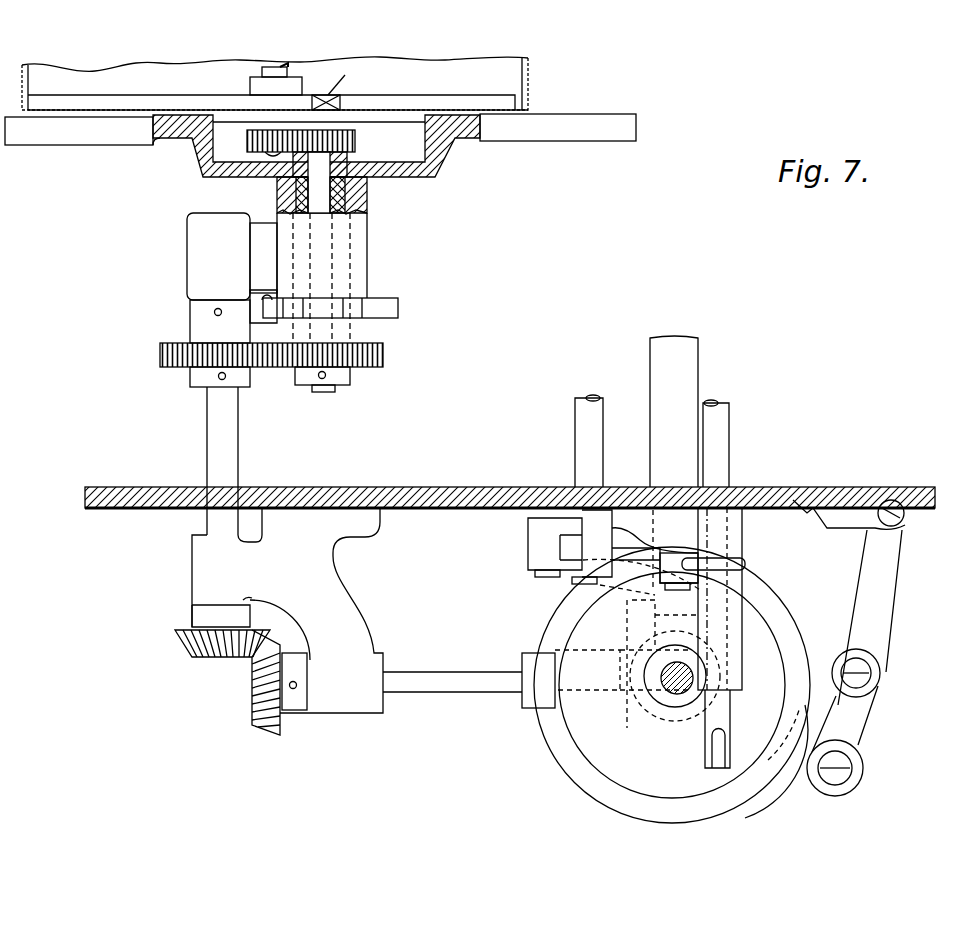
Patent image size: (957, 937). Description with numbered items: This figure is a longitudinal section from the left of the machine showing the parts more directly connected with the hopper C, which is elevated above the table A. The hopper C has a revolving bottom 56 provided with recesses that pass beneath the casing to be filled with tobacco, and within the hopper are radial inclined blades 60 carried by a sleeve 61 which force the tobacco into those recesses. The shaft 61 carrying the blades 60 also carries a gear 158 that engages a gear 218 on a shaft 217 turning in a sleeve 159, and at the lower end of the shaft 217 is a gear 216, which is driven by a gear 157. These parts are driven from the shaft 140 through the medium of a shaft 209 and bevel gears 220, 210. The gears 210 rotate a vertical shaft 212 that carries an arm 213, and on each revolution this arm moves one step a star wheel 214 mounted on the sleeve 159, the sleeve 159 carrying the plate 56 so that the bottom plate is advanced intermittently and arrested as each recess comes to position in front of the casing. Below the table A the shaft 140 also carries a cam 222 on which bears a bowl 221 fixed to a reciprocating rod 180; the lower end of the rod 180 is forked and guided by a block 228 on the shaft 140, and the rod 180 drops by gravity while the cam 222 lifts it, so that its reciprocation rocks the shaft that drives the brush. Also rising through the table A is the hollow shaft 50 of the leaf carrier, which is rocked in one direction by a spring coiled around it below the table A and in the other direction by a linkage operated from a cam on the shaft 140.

The hopper C is at (530, 75).
The radial inclined blades 60 is at (407, 88).
The sleeve 61 is at (263, 68).
The revolving bottom 56 is at (636, 124).
The gear 158 is at (247, 145).
The gear 218 is at (355, 139).
The shaft 217 is at (312, 196).
The sleeve 159 is at (367, 204).
The star wheel 214 is at (398, 307).
The arm 213 is at (233, 332).
The gear 216 is at (383, 355).
The gear 157 is at (163, 367).
The vertical shaft 212 is at (236, 457).
The table A is at (455, 482).
The bevel gears 210 is at (253, 690).
The shaft 209 is at (462, 667).
The cam 222 is at (780, 597).
The reciprocating rod 180 is at (693, 373).
The hollow shaft 50 is at (730, 453).
The bowl 221 is at (743, 523).
The bevel gear 220 is at (653, 633).
The shaft 140 is at (693, 672).
The block 228 is at (668, 710).